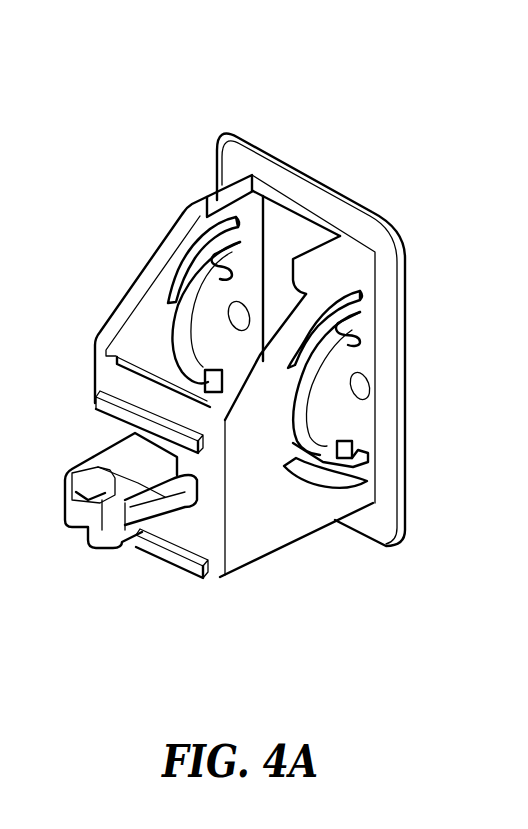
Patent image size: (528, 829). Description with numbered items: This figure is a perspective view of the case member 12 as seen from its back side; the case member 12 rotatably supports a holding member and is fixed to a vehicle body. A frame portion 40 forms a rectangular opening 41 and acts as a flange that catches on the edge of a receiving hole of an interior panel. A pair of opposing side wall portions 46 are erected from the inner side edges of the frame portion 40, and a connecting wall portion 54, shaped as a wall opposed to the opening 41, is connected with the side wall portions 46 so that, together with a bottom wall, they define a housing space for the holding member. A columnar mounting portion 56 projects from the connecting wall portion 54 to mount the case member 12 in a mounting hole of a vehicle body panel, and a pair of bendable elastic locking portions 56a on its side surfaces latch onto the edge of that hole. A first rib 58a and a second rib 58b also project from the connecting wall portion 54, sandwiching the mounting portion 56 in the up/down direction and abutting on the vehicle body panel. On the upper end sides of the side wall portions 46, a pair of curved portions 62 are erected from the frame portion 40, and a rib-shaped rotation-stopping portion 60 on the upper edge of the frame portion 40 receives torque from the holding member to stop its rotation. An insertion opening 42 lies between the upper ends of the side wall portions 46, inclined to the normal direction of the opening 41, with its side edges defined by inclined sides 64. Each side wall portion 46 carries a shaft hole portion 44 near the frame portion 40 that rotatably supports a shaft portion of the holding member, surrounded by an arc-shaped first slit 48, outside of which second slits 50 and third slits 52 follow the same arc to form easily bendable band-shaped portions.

The case member 12 is at (275, 609).
The frame portion 40 is at (373, 210).
The opening 41 is at (290, 250).
The insertion opening 42 is at (160, 347).
The shaft hole portions 44 is at (362, 384).
The side wall portions 46 is at (152, 306).
The first slits 48 is at (313, 409).
The second slits 50 is at (362, 297).
The third slits 52 is at (362, 487).
The connecting wall portion 54 is at (213, 517).
The mounting portion 56 is at (110, 535).
The locking portions 56a is at (160, 515).
The first rib 58a is at (130, 403).
The second rib 58b is at (185, 560).
The rotation-stopping portion 60 is at (295, 205).
The curved portions 62 is at (207, 197).
The inclined sides 64 is at (160, 280).